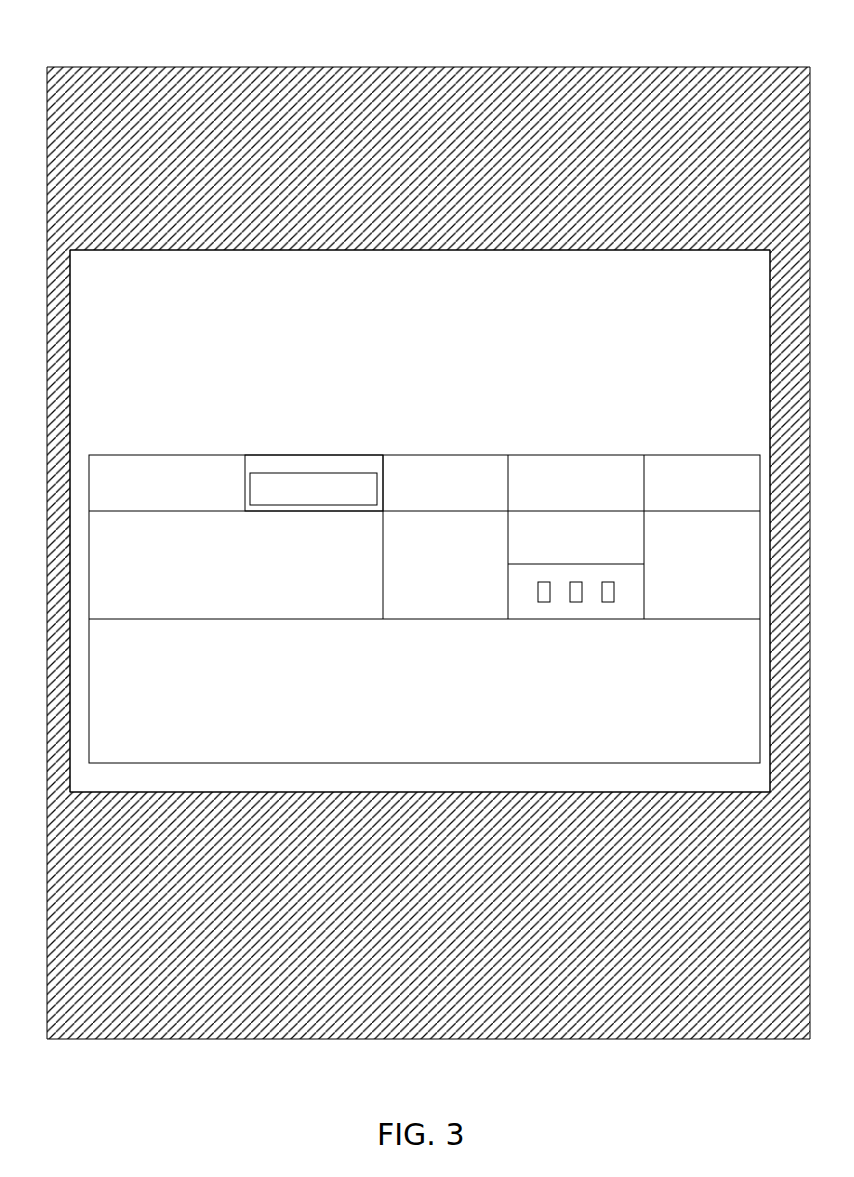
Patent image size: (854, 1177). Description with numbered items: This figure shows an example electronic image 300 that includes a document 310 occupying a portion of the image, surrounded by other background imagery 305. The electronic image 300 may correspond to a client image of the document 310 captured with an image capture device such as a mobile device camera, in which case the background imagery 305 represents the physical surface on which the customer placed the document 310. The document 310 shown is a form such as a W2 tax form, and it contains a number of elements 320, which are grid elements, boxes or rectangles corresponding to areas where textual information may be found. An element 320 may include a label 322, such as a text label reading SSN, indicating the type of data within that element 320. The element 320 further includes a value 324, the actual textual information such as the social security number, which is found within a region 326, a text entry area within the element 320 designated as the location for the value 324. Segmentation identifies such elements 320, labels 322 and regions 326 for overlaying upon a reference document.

The electronic image 300 is at (109, 36).
The background imagery 305 is at (385, 100).
The document 310 is at (70, 358).
The elements 320 is at (192, 470).
The label 322 is at (265, 470).
The value 324 is at (345, 480).
The region 326 is at (363, 477).